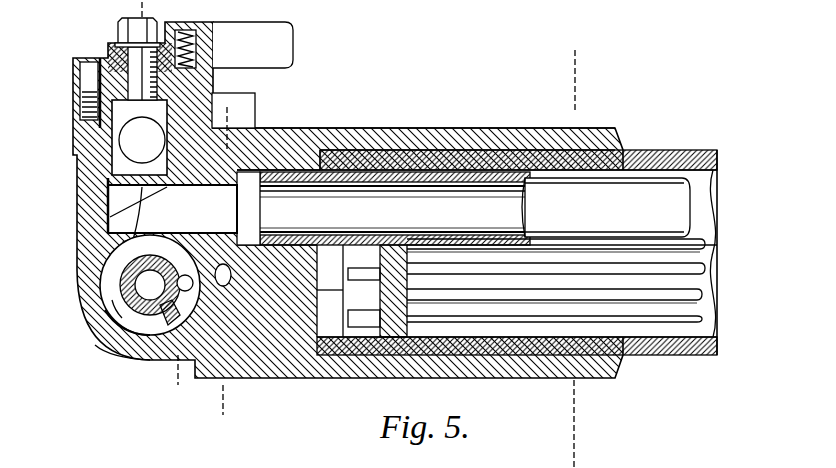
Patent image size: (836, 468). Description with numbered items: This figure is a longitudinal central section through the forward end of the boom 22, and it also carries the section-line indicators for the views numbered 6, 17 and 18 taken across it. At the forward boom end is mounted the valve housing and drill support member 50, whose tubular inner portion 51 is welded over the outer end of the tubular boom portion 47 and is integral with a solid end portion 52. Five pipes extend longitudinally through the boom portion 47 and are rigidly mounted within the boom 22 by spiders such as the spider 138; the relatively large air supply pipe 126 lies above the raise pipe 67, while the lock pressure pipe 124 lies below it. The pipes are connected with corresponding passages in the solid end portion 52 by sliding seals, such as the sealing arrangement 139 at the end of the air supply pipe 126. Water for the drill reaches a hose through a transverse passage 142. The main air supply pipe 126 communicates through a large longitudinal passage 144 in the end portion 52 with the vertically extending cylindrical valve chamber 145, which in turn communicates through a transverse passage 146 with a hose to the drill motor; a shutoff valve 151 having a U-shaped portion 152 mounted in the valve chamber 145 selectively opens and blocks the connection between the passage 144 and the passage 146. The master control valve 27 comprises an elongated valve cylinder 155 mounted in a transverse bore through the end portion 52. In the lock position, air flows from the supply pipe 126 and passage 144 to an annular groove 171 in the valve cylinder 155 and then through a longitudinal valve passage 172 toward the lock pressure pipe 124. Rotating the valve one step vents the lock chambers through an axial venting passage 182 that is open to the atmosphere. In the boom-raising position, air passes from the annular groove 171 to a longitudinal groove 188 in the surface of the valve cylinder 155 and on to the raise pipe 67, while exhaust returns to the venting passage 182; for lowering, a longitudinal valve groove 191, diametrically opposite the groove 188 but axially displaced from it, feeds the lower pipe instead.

The boom 22 is at (698, 356).
The master control valve 27 is at (105, 312).
The tubular boom portion 47 is at (687, 153).
The valve housing and drill support member 50 is at (493, 122).
The tubular inner portion 51 is at (377, 133).
The solid end portion 52 is at (288, 356).
The raise pipe 67 is at (693, 248).
The lock pressure pipe 124 is at (690, 300).
The air supply pipe 126 is at (670, 195).
The spider 138 is at (393, 320).
The sealing arrangement 139 is at (297, 247).
The transverse passage 142 is at (228, 282).
The longitudinal passage 144 is at (207, 192).
The valve chamber 145 is at (108, 194).
The transverse passage 146 is at (122, 143).
The shutoff valve 151 is at (278, 45).
The U-shaped portion 152 is at (117, 171).
The valve cylinder 155 is at (128, 279).
The annular groove 171 is at (123, 318).
The longitudinal valve passage 172 is at (185, 275).
The axial venting passage 182 is at (147, 286).
The longitudinal groove 188 is at (125, 247).
The longitudinal valve groove 191 is at (120, 359).
The section line 6 is at (140, 7).
The section line 17 is at (226, 117).
The section line 18 is at (573, 58).